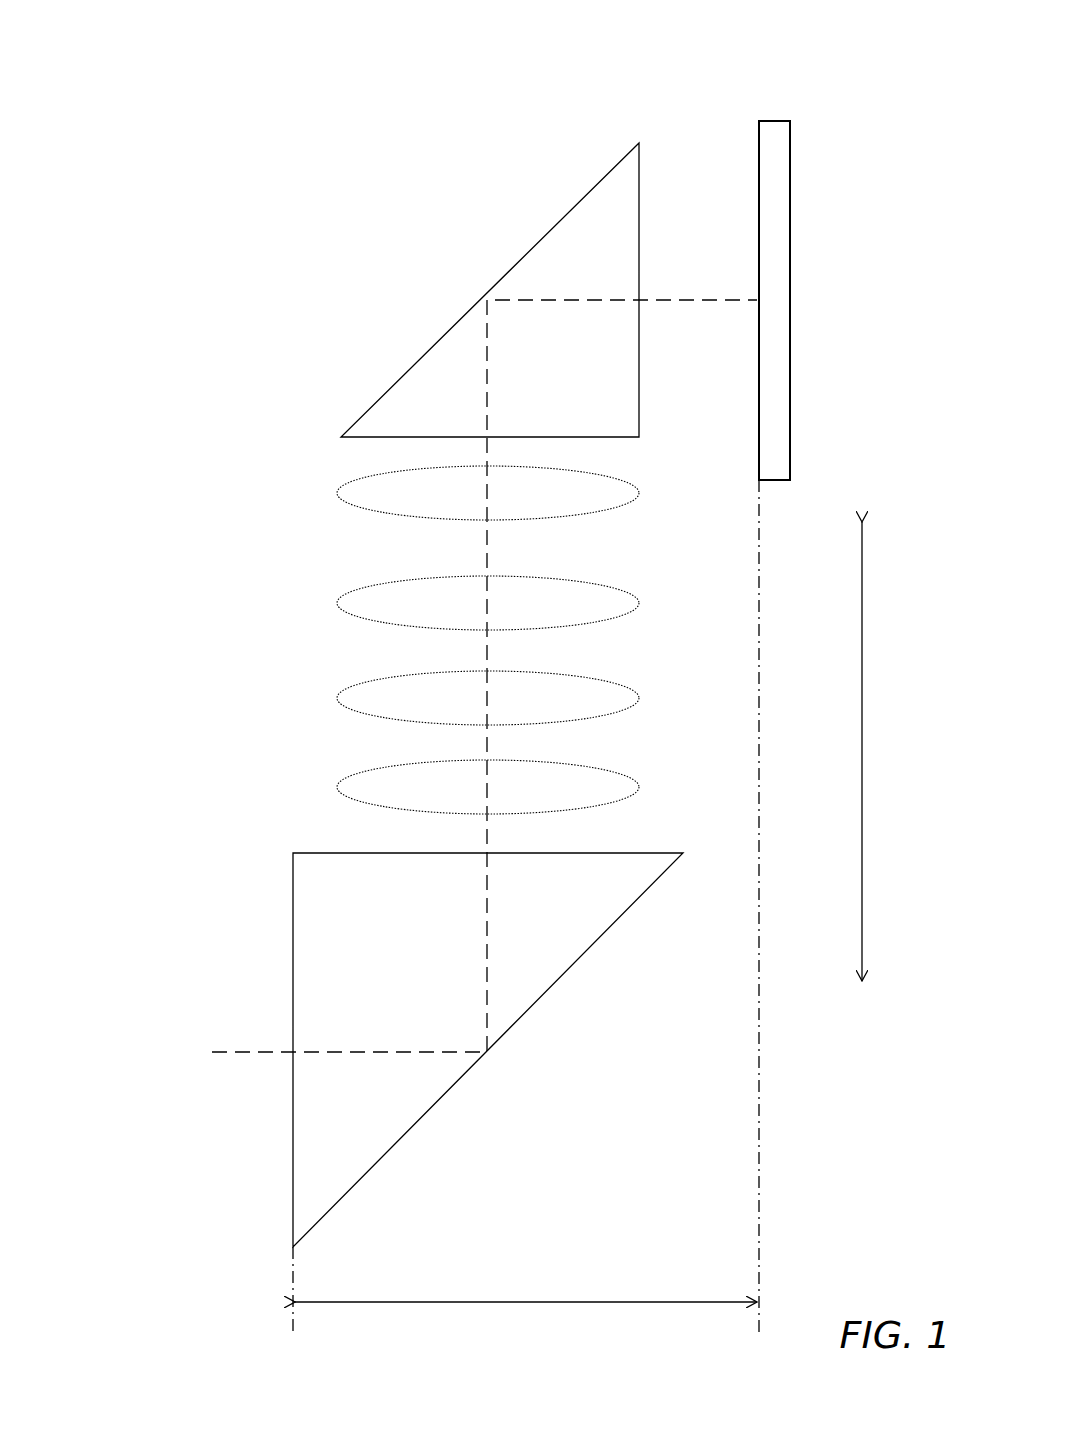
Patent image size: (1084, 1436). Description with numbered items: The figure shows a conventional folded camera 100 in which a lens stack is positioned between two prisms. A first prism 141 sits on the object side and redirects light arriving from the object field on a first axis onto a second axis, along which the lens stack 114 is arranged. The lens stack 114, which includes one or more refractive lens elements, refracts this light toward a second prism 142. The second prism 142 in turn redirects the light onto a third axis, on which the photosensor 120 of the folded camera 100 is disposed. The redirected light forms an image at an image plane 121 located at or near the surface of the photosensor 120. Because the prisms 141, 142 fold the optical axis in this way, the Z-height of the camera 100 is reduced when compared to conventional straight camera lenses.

The folded camera 100 is at (200, 76).
The lens stack 114 is at (292, 634).
The photosensor 120 is at (793, 118).
The image plane 121 is at (758, 118).
The first prism 141 is at (488, 1050).
The second prism 142 is at (490, 290).